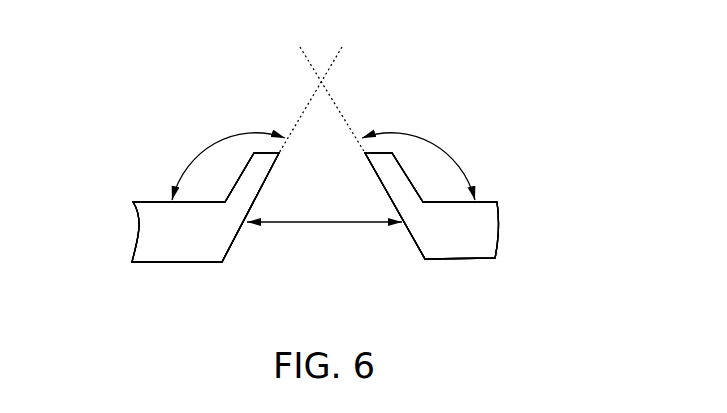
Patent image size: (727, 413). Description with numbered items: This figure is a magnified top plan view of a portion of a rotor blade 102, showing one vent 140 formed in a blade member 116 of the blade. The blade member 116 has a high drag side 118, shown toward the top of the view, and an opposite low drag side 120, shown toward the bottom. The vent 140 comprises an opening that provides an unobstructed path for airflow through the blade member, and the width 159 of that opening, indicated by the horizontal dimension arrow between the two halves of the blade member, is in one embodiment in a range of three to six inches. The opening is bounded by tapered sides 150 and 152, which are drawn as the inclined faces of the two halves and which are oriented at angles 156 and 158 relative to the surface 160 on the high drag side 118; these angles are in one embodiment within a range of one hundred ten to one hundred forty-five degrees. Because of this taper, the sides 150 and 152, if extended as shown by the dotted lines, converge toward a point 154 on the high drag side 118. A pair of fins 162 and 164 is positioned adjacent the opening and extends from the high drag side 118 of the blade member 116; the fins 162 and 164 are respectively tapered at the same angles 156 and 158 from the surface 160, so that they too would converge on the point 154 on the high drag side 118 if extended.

The rotor blade 102 is at (140, 237).
The second blade member 116 is at (490, 238).
The high drag side 118 is at (162, 85).
The low drag side 120 is at (475, 280).
The vent 140 is at (493, 55).
The first tapered side 150 is at (229, 250).
The second tapered side 152 is at (413, 243).
The point 154 is at (322, 81).
The first angle 156 is at (208, 143).
The second angle 158 is at (452, 150).
The width 159 is at (295, 223).
The surface 160 is at (140, 200).
The first fin 162 is at (253, 178).
The second fin 164 is at (377, 167).